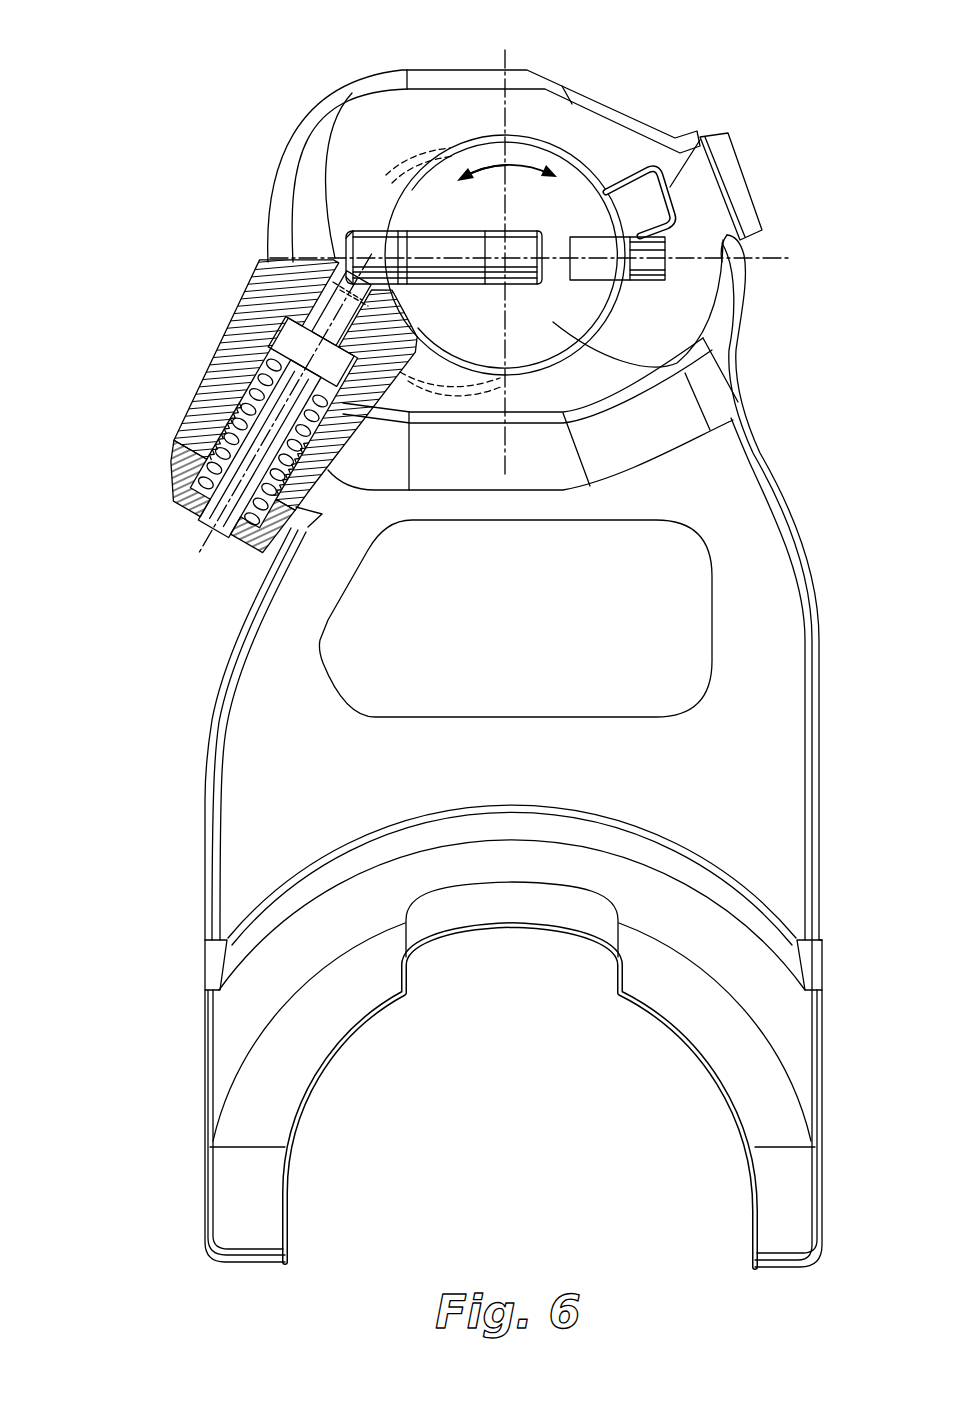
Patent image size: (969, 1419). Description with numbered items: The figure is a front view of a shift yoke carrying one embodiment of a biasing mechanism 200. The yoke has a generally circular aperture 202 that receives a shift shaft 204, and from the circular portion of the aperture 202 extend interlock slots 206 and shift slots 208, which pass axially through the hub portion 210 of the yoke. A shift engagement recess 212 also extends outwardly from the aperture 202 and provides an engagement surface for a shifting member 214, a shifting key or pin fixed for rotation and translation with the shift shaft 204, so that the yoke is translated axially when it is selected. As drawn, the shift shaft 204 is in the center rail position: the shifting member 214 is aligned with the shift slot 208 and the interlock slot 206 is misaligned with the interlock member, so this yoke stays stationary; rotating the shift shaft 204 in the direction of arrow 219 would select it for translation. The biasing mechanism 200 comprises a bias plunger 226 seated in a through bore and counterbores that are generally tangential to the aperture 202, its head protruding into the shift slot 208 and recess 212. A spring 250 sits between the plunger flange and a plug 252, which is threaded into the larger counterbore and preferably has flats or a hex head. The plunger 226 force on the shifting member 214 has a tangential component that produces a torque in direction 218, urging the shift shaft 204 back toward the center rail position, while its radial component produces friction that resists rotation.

The biasing mechanism 200 is at (168, 568).
The aperture 202 is at (565, 147).
The shift shaft 204 is at (660, 364).
The interlock slot 206 is at (704, 138).
The shift slot 208 is at (356, 222).
The hub portion 210 is at (402, 133).
The shift engagement recess 212 is at (400, 345).
The shifting member 214 is at (354, 222).
The direction 218 is at (567, 200).
The arrow 219 is at (465, 188).
The bias plunger 226 is at (268, 320).
The spring 250 is at (236, 376).
The plug 252 is at (175, 512).